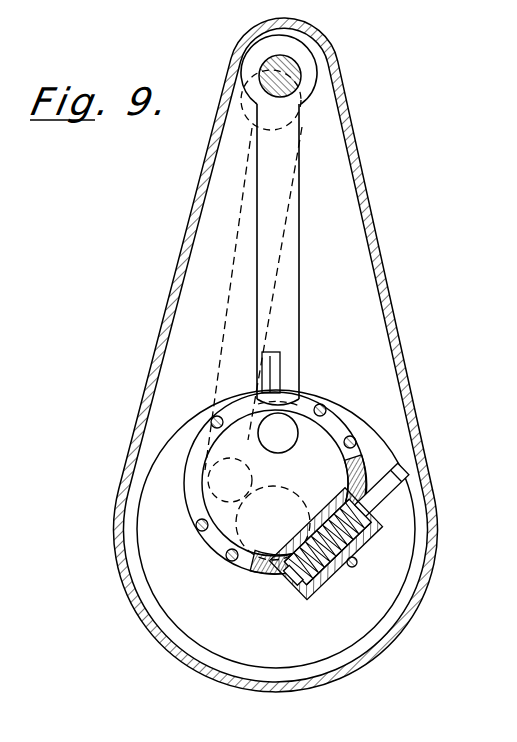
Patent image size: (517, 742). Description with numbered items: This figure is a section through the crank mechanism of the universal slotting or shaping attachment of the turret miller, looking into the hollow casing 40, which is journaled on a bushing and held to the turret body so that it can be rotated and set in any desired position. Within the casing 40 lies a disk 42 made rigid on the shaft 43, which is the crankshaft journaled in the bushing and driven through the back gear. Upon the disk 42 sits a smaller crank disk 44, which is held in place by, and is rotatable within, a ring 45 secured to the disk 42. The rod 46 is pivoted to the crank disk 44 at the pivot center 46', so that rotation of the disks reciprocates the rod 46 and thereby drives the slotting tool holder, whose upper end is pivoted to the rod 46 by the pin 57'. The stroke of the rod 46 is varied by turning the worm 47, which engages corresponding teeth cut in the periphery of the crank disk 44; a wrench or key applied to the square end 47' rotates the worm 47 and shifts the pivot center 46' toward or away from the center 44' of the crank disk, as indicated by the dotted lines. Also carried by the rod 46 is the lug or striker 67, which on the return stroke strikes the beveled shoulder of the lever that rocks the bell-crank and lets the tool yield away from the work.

The hollow casing 40 is at (373, 221).
The disk 42 is at (276, 529).
The shaft 43 is at (226, 558).
The crank disk 44 is at (308, 514).
The center of the crank disk 44' is at (273, 552).
The ring 45 is at (194, 516).
The rod 46 is at (268, 252).
The pivot center 46' is at (264, 444).
The worm 47 is at (325, 547).
The square end 47' is at (416, 489).
The pin 57' is at (325, 76).
The lug or striker 67 is at (279, 372).